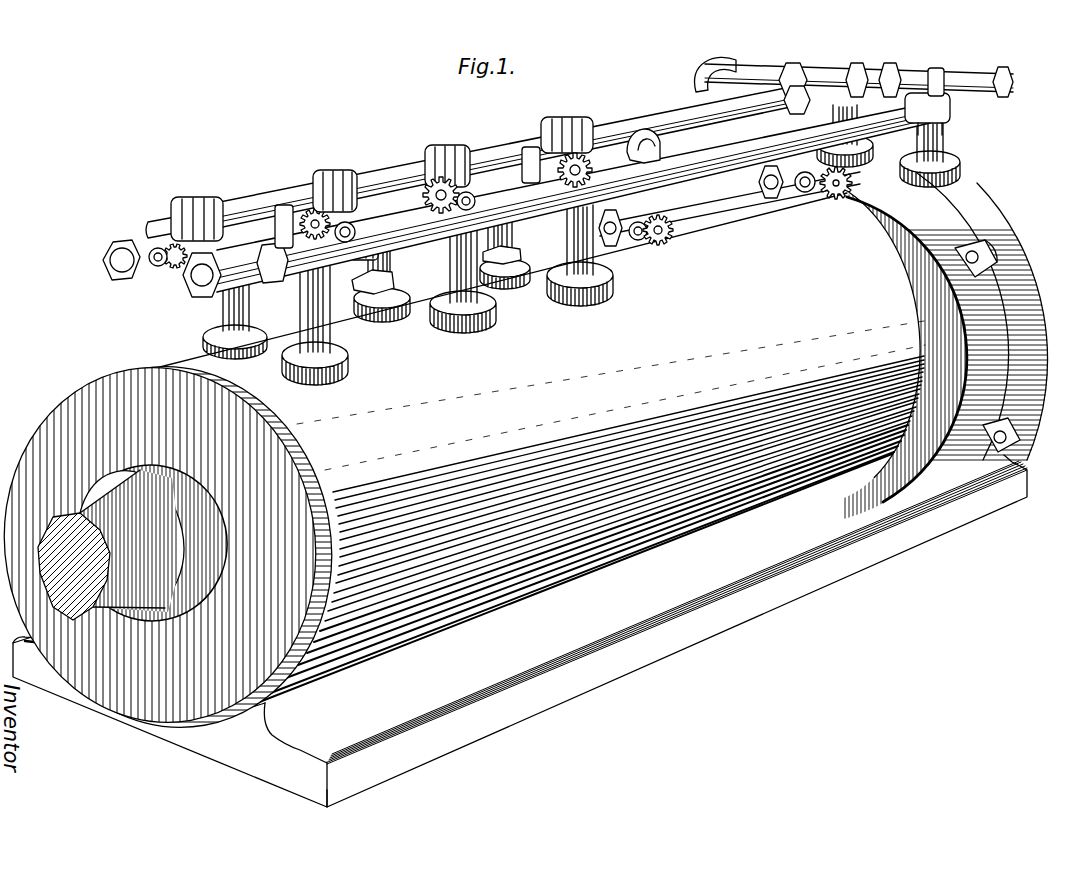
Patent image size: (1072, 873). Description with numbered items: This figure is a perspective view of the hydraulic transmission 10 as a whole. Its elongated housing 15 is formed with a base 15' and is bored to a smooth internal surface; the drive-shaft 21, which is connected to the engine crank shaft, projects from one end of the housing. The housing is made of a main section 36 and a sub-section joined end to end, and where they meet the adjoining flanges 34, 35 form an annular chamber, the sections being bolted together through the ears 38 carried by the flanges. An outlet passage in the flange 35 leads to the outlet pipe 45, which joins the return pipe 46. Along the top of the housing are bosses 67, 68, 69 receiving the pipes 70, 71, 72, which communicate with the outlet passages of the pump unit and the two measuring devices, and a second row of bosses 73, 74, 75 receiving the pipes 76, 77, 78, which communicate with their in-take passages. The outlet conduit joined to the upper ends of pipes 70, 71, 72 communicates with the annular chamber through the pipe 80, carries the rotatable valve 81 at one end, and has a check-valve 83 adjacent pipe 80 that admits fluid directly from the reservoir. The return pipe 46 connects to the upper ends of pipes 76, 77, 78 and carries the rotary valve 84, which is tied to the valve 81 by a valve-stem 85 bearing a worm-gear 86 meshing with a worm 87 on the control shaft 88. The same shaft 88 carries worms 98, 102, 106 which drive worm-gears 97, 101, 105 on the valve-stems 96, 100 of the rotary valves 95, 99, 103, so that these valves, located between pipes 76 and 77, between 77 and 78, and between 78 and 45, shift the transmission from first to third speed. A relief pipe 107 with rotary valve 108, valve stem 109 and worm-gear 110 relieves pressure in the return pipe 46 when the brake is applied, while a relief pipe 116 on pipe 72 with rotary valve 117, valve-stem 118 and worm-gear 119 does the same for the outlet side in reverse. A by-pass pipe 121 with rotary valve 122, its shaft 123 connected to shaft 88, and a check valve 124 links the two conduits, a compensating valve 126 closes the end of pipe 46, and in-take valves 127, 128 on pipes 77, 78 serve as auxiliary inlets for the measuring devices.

The transmission 10 is at (320, 696).
The housing 15 is at (520, 631).
The base 15' is at (457, 743).
The drive-shaft 21 is at (50, 577).
The flange 34 is at (952, 354).
The flange 35 is at (982, 316).
The main section 36 is at (534, 452).
The ears 38 is at (1000, 245).
The outlet pipe 45 is at (873, 141).
The return pipe 46 is at (662, 112).
The boss 67 is at (338, 370).
The boss 68 is at (495, 325).
The boss 69 is at (598, 295).
The pipe 70 is at (315, 352).
The pipe 71 is at (455, 320).
The pipe 72 is at (578, 280).
The boss 73 is at (203, 340).
The boss 74 is at (385, 320).
The boss 75 is at (478, 290).
The pipe 76 is at (249, 300).
The pipe 77 is at (355, 262).
The pipe 78 is at (514, 243).
The pipe 80 is at (943, 143).
The rotatable valve 81 is at (238, 250).
The check-valve 83 is at (1000, 96).
The rotary valve 84 is at (122, 240).
The valve-stem 85 is at (157, 267).
The worm-gear 86 is at (175, 270).
The worm 87 is at (197, 198).
The shaft 88 is at (160, 220).
The rotary valve 95 is at (287, 205).
The valve-stem 96 is at (325, 205).
The worm-gear 97 is at (350, 222).
The worm 98 is at (333, 170).
The rotary valve 99 is at (428, 160).
The valve stem 100 is at (470, 195).
The worm-gear 101 is at (470, 175).
The worm 102 is at (457, 135).
The rotary valve 103 is at (555, 117).
The worm-gear 105 is at (598, 160).
The worm 106 is at (588, 106).
The relief pipe 107 is at (658, 130).
The rotary valve 108 is at (771, 198).
The valve stem 109 is at (805, 193).
The worm-gear 110 is at (848, 192).
The relief pipe 116 is at (612, 245).
The rotary valve 117 is at (616, 212).
The valve-stem 118 is at (662, 246).
The worm-gear 119 is at (648, 228).
The pipe 121 is at (775, 56).
The rotary valve 122 is at (857, 66).
The shaft 123 is at (794, 80).
The check valve 124 is at (735, 56).
The compensating valve 126 is at (898, 56).
The in-take valve 127 is at (392, 276).
The in-take valve 128 is at (521, 257).